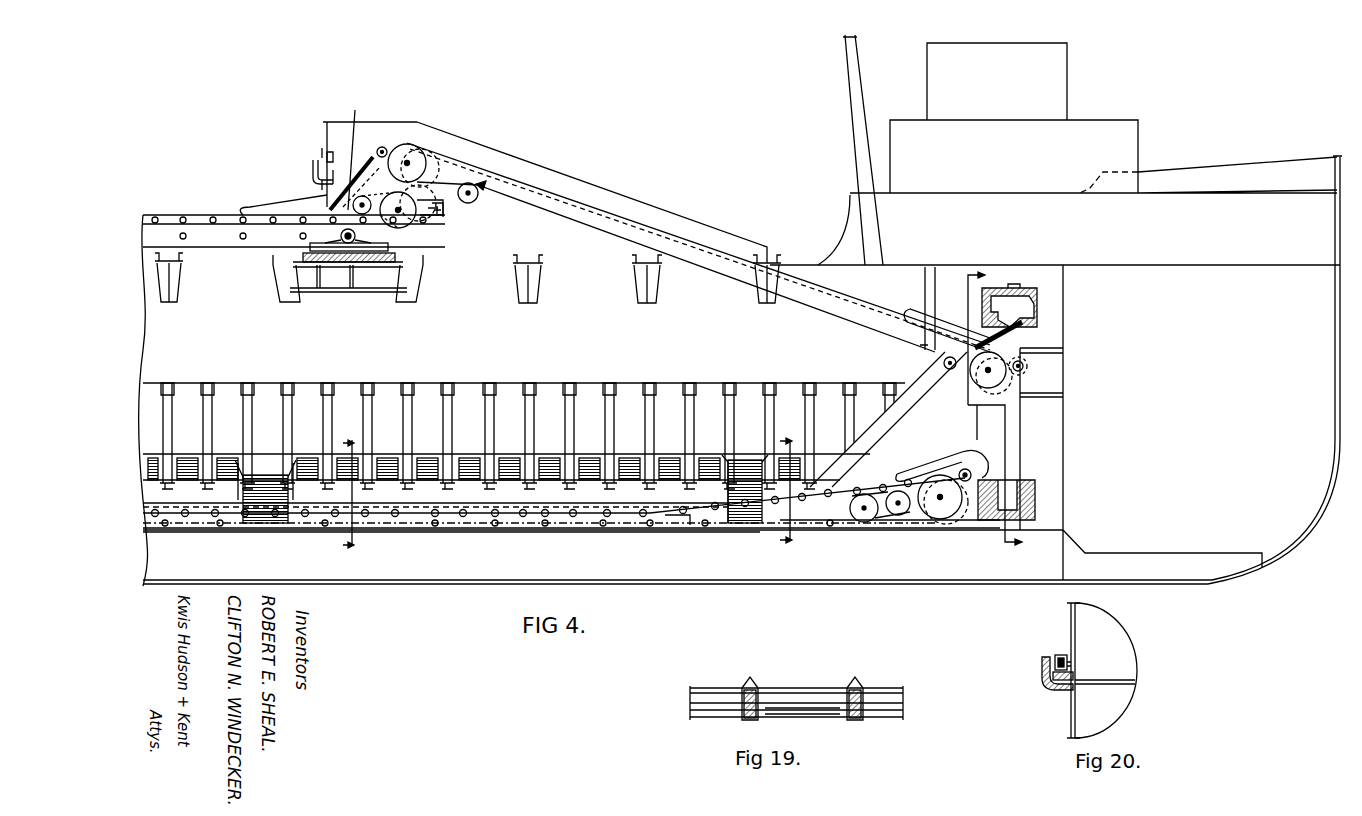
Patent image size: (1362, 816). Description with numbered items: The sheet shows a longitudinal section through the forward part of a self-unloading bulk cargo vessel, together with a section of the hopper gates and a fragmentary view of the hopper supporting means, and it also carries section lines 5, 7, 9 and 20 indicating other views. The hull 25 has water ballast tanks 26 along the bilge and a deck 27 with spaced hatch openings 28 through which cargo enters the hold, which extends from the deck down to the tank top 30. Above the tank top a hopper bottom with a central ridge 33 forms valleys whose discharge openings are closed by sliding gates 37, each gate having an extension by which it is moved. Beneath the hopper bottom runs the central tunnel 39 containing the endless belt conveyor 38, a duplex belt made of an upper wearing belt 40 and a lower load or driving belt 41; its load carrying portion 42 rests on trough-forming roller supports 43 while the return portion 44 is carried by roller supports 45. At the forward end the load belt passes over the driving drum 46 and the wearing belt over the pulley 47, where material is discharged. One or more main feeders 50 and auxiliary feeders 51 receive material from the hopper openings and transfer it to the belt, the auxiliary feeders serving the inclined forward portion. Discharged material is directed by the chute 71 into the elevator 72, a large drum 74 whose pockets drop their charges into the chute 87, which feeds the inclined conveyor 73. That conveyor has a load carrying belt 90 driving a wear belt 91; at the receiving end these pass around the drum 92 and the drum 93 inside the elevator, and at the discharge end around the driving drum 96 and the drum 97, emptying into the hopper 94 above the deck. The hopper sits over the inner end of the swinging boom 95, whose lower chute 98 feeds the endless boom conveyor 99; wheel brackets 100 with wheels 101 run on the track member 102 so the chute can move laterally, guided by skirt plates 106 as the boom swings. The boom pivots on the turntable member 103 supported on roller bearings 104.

In FIG. 4, the section line 5- 5 is at (1002, 408).
In FIG. 4, the section line 7- 7 is at (341, 495).
In FIG. 4, the section line 9- 9 is at (774, 492).
In FIG. 4, the section line 20- 20 is at (318, 186).
In FIG. 4, the hull 25 is at (615, 335).
In FIG. 4, the water ballast tanks 26 is at (420, 578).
In FIG. 4, the deck 27 is at (528, 265).
In FIG. 4, the hatch openings 28 is at (458, 258).
In FIG. 4, the tank top 30 is at (595, 530).
In FIG. 4, the central ridge 33 is at (435, 383).
In FIG. 4, the sliding gates 37 is at (520, 436).
In FIG. 19, the sliding gates 37 is at (790, 700).
In FIG. 4, the endless belt conveyor 38 is at (545, 515).
In FIG. 4, the central tunnel 39 is at (393, 494).
In FIG. 4, the upper wearing belt 40 is at (818, 490).
In FIG. 4, the lower load or driving belt 41 is at (835, 495).
In FIG. 4, the load carrying portion 42 is at (520, 510).
In FIG. 4, the roller supports 43 is at (560, 525).
In FIG. 4, the return portion 44 is at (845, 525).
In FIG. 4, the roller supports 45 is at (668, 525).
In FIG. 4, the driving drum or pulley 46 is at (940, 520).
In FIG. 4, the pulley 47 is at (965, 468).
In FIG. 4, the main feeders 50 is at (255, 520).
In FIG. 4, the auxiliary feeders 51 is at (755, 525).
In FIG. 4, the chute 71 is at (945, 460).
In FIG. 4, the elevator 72 is at (1040, 312).
In FIG. 4, the inclined conveyor 73 is at (860, 308).
In FIG. 4, the drum 74 is at (1022, 300).
In FIG. 4, the chute 87 is at (1010, 338).
In FIG. 4, the load carrying belt 90 is at (845, 312).
In FIG. 4, the wear belt 91 is at (818, 290).
In FIG. 4, the drum 92 is at (980, 376).
In FIG. 4, the drum 93 is at (1027, 367).
In FIG. 4, the hopper 94 is at (327, 137).
In FIG. 20, the hopper 94 is at (1107, 647).
In FIG. 4, the swinging boom 95 is at (170, 237).
In FIG. 4, the driving drum 96 is at (420, 152).
In FIG. 4, the drum 97 is at (385, 148).
In FIG. 4, the chute 98 is at (355, 140).
In FIG. 20, the chute 98 is at (1115, 708).
In FIG. 4, the endless boom conveyor 99 is at (262, 207).
In FIG. 20, the wheel brackets 100 is at (1058, 688).
In FIG. 20, the wheels 101 is at (1058, 653).
In FIG. 20, the member 102 is at (1078, 676).
In FIG. 4, the member 103 is at (312, 245).
In FIG. 4, the roller bearings 104 is at (393, 252).
In FIG. 4, the skirt plates 106 is at (268, 197).